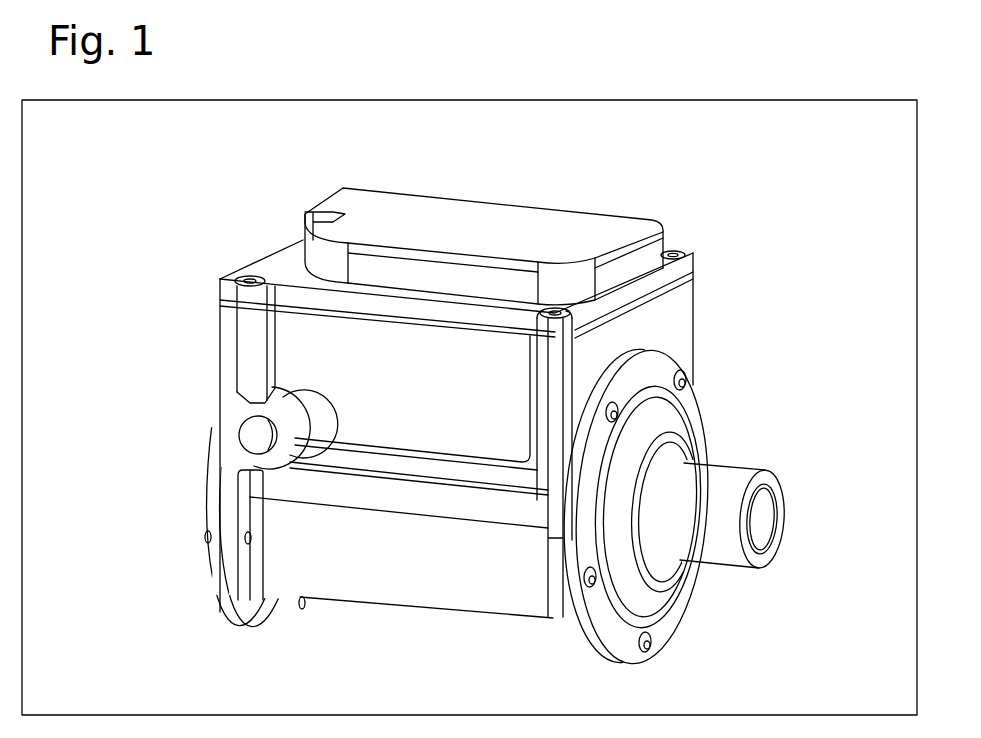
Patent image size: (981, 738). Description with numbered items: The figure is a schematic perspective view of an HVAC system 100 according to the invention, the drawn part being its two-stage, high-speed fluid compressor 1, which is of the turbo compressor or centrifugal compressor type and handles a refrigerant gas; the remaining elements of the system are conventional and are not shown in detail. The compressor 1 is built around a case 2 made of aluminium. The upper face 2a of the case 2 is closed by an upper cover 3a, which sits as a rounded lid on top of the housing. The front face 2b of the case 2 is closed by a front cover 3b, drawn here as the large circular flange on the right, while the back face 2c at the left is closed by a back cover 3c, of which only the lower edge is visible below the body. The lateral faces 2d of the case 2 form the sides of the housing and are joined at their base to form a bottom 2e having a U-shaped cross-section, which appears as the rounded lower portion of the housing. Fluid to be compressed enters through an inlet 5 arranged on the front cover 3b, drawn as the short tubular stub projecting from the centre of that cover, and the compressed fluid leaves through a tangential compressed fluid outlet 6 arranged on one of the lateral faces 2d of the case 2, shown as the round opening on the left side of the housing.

The HVAC system 100 is at (583, 100).
The fluid compressor 1 is at (702, 202).
The case 2 is at (437, 625).
The upper face 2a is at (283, 274).
The front face 2b is at (697, 301).
The back face 2c is at (205, 308).
The lateral faces 2d is at (471, 430).
The bottom 2e is at (371, 600).
The upper cover 3a is at (452, 215).
The front cover 3b is at (693, 412).
The back cover 3c is at (225, 562).
The inlet 5 is at (765, 516).
The compressed fluid outlet 6 is at (250, 434).